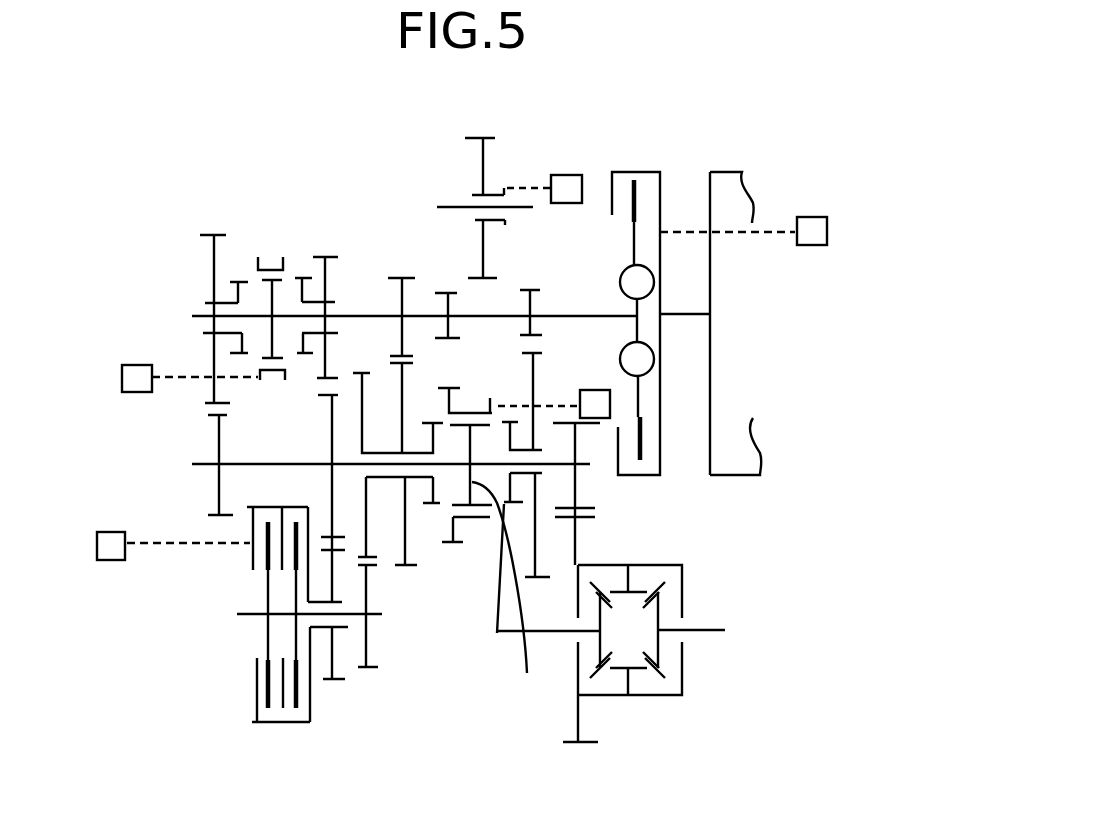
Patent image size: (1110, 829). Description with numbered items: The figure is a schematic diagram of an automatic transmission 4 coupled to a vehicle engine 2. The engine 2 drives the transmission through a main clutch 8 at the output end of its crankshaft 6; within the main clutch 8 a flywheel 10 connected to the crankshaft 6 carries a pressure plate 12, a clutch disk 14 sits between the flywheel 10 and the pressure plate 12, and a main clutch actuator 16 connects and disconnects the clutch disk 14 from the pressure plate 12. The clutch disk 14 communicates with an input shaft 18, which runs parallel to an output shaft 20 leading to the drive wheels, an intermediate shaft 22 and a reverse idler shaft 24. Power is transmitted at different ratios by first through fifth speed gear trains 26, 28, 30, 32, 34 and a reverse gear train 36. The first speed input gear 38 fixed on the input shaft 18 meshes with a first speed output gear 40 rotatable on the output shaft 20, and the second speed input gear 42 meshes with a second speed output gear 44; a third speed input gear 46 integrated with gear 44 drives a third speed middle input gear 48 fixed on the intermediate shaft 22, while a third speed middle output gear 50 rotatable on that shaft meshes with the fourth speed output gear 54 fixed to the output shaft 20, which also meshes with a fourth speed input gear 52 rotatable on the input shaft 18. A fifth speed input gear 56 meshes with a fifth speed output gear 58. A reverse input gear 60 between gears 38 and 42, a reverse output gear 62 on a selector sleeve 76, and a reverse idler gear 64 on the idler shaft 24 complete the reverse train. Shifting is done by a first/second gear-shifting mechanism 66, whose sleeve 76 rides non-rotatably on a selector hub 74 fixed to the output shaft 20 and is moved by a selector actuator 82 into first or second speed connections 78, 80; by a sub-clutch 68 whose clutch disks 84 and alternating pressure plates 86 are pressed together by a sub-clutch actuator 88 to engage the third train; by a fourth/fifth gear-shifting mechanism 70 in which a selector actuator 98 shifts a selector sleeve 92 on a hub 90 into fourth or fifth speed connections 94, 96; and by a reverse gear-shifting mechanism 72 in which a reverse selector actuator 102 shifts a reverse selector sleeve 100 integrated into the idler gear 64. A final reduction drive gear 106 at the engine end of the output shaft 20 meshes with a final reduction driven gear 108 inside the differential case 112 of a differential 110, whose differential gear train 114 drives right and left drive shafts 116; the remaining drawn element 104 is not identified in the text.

The engine 2 is at (727, 151).
The automatic transmission 4 is at (128, 150).
The crankshaft 6 is at (680, 313).
The main clutch 8 is at (652, 101).
The flywheel 10 is at (657, 200).
The pressure plate 12 is at (612, 212).
The clutch disk 14 is at (640, 173).
The main clutch actuator 16 is at (810, 222).
The input shaft 18 is at (200, 320).
The output shaft 20 is at (200, 467).
The intermediate shaft 22 is at (237, 617).
The reverse idler shaft 24 is at (440, 205).
The first speed gear train 26 is at (526, 276).
The second speed gear train 28 is at (386, 257).
The third speed gear train 30 is at (355, 690).
The fourth speed gear train 32 is at (330, 232).
The fifth speed gear train 34 is at (208, 212).
The reverse gear train 36 is at (497, 124).
The first speed input gear 38 is at (540, 294).
The first speed output gear 40 is at (540, 357).
The second speed input gear 42 is at (407, 278).
The second speed output gear 44 is at (413, 570).
The third speed input gear 46 is at (362, 372).
The third speed middle input gear 48 is at (375, 670).
The third speed middle output gear 50 is at (332, 683).
The fourth speed input gear 52 is at (318, 383).
The fourth speed output gear 54 is at (325, 400).
The fifth speed input gear 56 is at (207, 230).
The fifth speed output gear 58 is at (212, 417).
The reverse input gear 60 is at (445, 292).
The reverse output gear 62 is at (445, 386).
The reverse idler gear 64 is at (475, 137).
The first/second gear-shifting mechanism 66 is at (466, 556).
The sub-clutch 68 is at (192, 667).
The fourth/fifth gear-shifting mechanism 70 is at (284, 238).
The reverse gear-shifting mechanism 72 is at (518, 176).
The first/second selector hub 74 is at (497, 637).
The first/second selector sleeve 76 is at (472, 520).
The first speed connection 78 is at (527, 676).
The second speed connection 80 is at (430, 508).
The first/second selector actuator 82 is at (617, 407).
The clutch disks 84 is at (258, 692).
The pressure plates 86 is at (258, 677).
The sub-clutch actuator 88 is at (110, 563).
The fourth/fifth selector hub 90 is at (273, 283).
The fourth/fifth selector sleeve 92 is at (270, 256).
The fourth speed connection 94 is at (300, 278).
The fifth speed connection 96 is at (240, 280).
The fourth/fifth selector actuator 98 is at (120, 378).
The reverse selector sleeve 100 is at (488, 192).
The reverse selector actuator 102 is at (574, 194).
The clutch 104 is at (612, 513).
The final reduction drive gear 106 is at (593, 507).
The final reduction driven gear 108 is at (593, 520).
The differential 110 is at (692, 700).
The differential case 112 is at (623, 697).
The differential gear train 114 is at (649, 676).
The drive shafts 116 is at (717, 634).